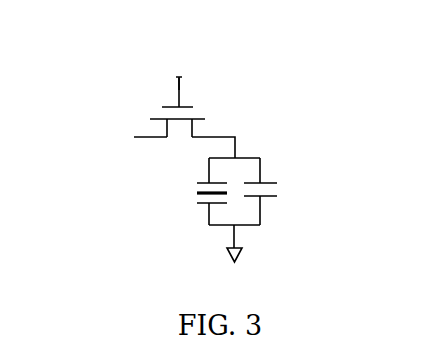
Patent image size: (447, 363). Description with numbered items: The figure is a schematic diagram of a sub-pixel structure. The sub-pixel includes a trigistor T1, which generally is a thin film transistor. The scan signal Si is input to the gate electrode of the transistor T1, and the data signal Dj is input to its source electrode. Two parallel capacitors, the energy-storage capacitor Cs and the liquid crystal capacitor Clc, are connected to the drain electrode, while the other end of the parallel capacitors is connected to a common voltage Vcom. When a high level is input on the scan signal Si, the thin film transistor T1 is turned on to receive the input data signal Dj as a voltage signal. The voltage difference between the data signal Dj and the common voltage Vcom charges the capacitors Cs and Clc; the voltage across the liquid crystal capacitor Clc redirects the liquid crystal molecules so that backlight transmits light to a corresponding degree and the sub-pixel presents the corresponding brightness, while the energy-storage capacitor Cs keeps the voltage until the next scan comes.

The trigistor T1 is at (185, 107).
The scan signal Si is at (183, 71).
The data signal Dj is at (129, 138).
The liquid crystal capacitor Clc is at (190, 191).
The energy-storage capacitor Cs is at (276, 191).
The common voltage Vcom is at (262, 250).